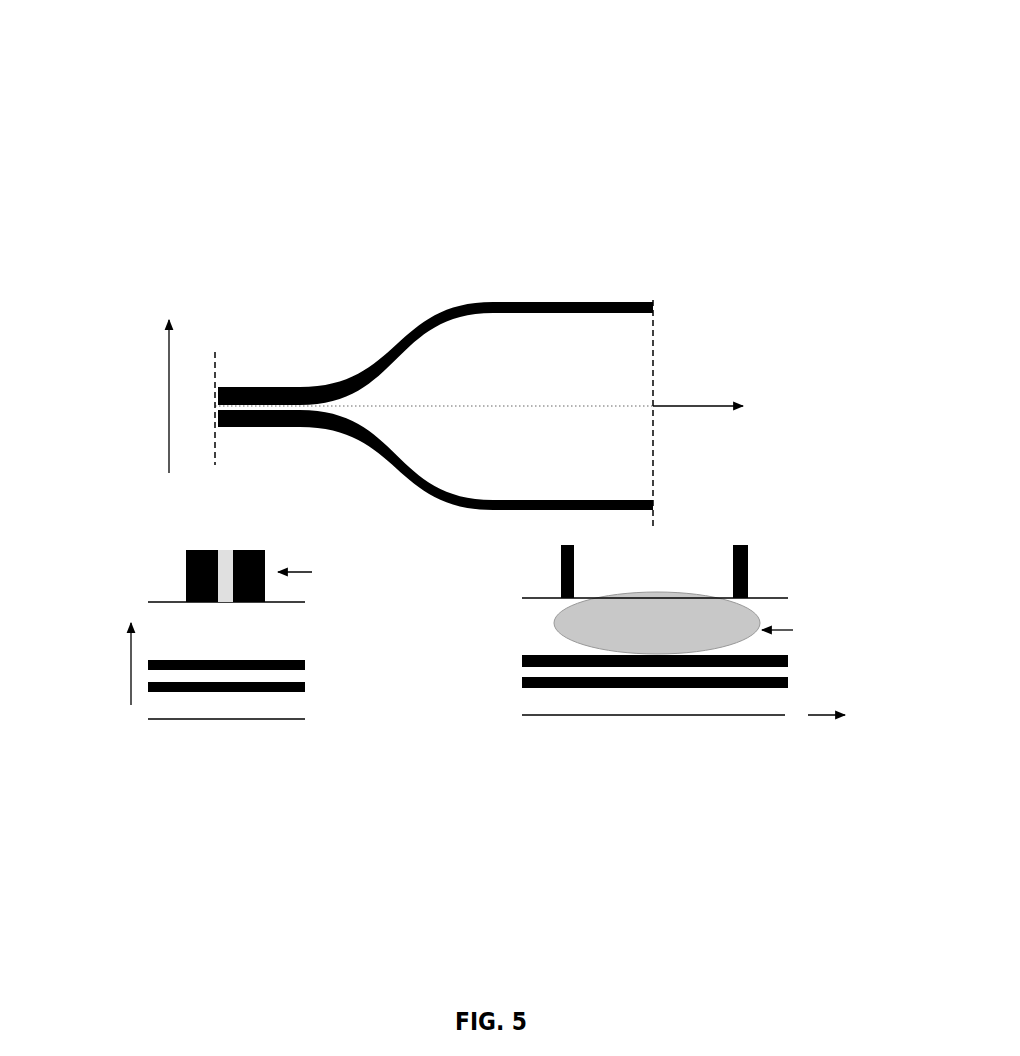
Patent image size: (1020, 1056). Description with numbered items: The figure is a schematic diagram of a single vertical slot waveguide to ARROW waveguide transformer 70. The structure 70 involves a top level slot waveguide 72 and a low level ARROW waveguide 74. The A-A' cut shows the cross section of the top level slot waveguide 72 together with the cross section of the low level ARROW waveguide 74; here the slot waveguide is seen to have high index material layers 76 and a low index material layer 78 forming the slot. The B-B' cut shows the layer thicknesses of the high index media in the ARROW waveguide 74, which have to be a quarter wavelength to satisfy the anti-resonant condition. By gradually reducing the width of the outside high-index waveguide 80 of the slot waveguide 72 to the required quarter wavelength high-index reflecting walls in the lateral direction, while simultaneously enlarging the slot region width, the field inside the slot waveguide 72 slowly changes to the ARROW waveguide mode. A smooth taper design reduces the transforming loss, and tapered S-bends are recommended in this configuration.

The single slot to ARROW transformer 70 is at (96, 120).
The top level slot waveguide 72 is at (292, 362).
The low level ARROW waveguide 74 is at (625, 697).
The high index material layers 76 is at (201, 559).
The low index material layer 78 is at (226, 575).
The outside high-index waveguide 80 is at (560, 301).